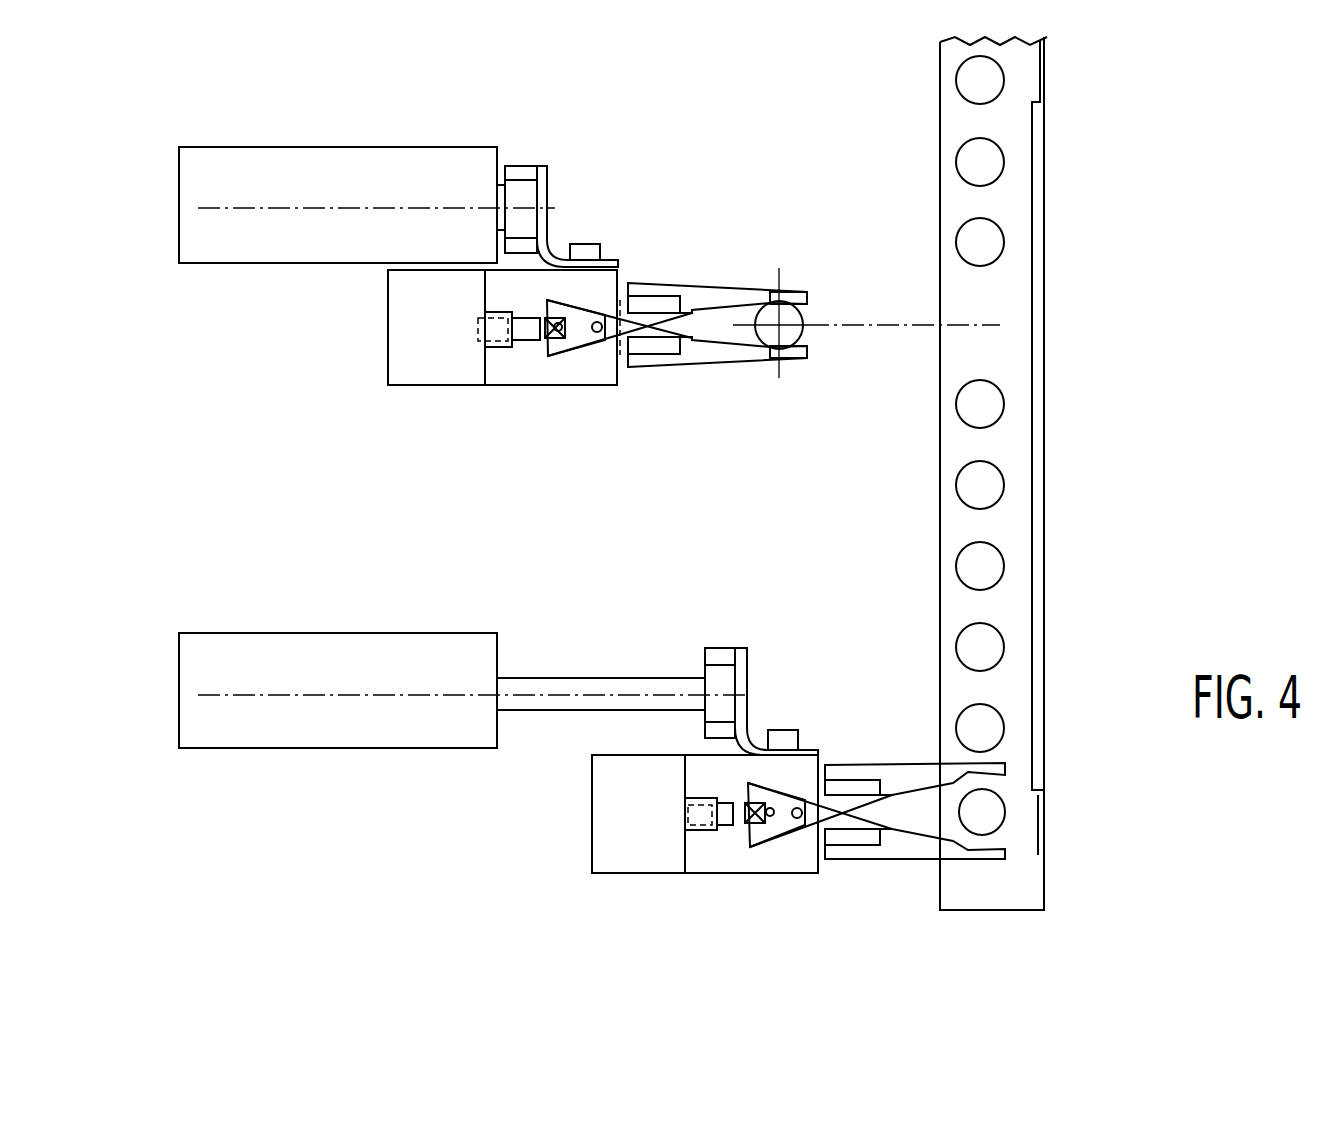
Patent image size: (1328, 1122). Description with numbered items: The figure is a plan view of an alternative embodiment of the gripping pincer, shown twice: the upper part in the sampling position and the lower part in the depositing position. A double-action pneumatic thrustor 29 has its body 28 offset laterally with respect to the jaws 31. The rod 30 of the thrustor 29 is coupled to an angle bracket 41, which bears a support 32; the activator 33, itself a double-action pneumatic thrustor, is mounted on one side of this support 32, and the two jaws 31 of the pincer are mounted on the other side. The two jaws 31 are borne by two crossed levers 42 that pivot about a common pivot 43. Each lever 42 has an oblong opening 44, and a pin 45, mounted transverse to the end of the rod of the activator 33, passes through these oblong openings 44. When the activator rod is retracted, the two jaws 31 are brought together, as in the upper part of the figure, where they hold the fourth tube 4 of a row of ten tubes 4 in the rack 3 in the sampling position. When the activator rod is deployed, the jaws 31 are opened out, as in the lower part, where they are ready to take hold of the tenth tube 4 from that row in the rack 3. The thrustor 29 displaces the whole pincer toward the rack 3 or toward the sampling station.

The rack 3 is at (1050, 255).
The tube 4 is at (755, 365).
The body 28 is at (338, 175).
The pneumatic thrustor 29 is at (179, 181).
The rod 30 is at (500, 200).
The jaw 31 is at (808, 303).
The support 32 is at (535, 370).
The activator 33 is at (425, 362).
The angle bracket 41 is at (545, 195).
The crossed lever 42 is at (610, 300).
The common pivot 43 is at (590, 365).
The oblong opening 44 is at (565, 300).
The pin 45 is at (548, 345).